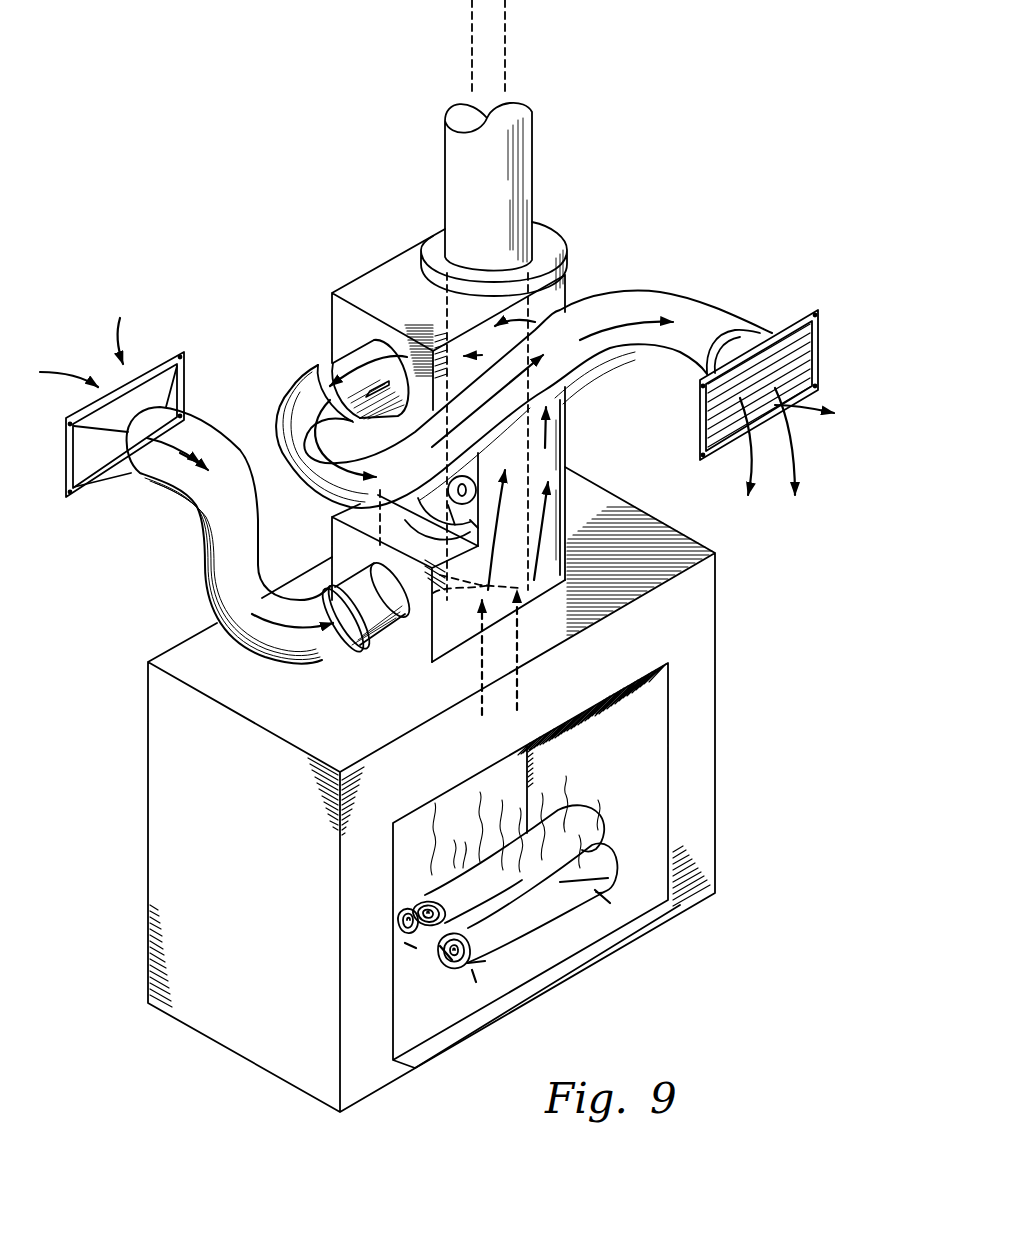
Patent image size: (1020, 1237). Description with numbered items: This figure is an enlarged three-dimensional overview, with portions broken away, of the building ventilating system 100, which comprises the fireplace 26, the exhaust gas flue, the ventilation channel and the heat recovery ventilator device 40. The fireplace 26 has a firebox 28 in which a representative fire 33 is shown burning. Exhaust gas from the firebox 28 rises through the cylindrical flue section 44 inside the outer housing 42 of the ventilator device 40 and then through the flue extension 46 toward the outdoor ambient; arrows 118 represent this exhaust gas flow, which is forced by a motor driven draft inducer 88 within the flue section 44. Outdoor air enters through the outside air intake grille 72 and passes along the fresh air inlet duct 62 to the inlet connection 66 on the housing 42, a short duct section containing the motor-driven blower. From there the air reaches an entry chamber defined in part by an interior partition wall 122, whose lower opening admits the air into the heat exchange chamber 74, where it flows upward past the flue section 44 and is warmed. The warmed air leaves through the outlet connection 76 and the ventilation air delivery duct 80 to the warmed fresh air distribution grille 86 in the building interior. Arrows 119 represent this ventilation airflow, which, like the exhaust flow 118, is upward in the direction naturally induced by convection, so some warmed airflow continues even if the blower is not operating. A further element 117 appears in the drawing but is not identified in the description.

The fireplace 26 is at (626, 781).
The firebox 28 is at (628, 826).
The fire 33 is at (553, 865).
The heat recovery ventilator device 40 is at (695, 210).
The outer housing 42 is at (566, 288).
The cylindrical flue section 44 is at (545, 257).
The flue extension 46 is at (493, 178).
The fresh air inlet duct 62 is at (212, 451).
The inlet connection 66 is at (355, 640).
The outside air intake grille 72 is at (80, 492).
The heat exchange chamber 74 is at (560, 462).
The outlet connection 76 is at (318, 365).
The ventilation air delivery duct 80 is at (688, 312).
The warmed fresh air distribution grille 86 is at (718, 436).
The motor driven draft inducer 88 is at (372, 533).
The system for ventilating the interior of the building 100 is at (770, 128).
The sensor 117 is at (387, 383).
The exhaust gas flow arrows 118 is at (507, 43).
The ventilation airflow arrows 119 is at (450, 328).
The interior partition wall 122 is at (468, 575).